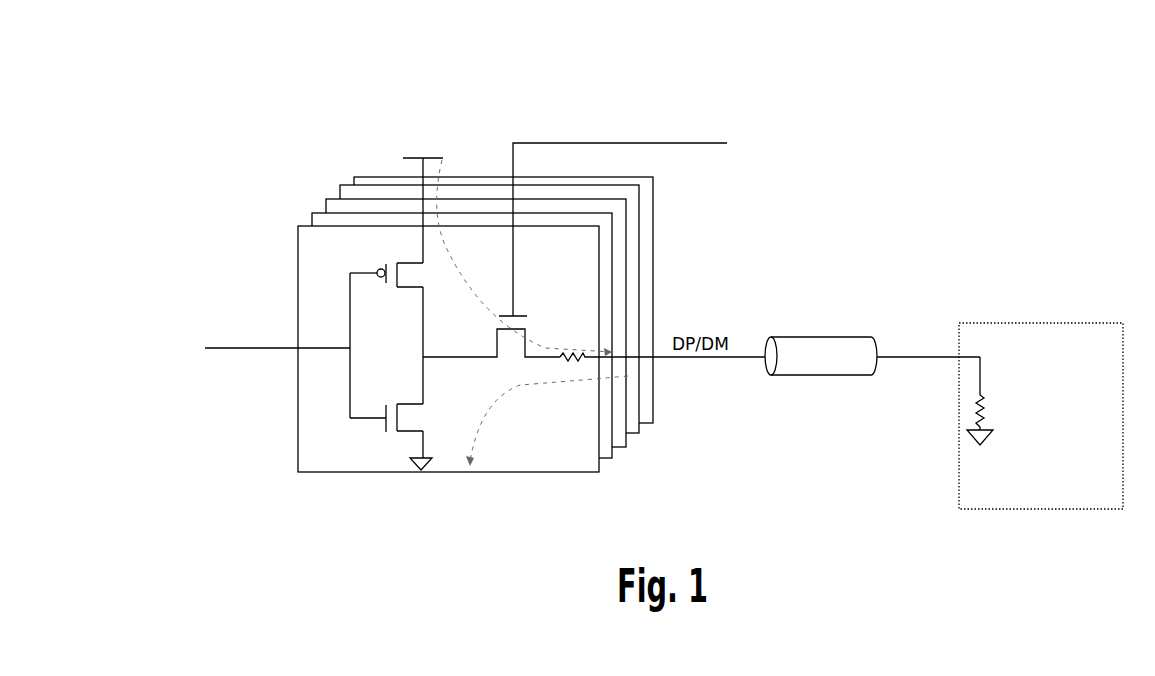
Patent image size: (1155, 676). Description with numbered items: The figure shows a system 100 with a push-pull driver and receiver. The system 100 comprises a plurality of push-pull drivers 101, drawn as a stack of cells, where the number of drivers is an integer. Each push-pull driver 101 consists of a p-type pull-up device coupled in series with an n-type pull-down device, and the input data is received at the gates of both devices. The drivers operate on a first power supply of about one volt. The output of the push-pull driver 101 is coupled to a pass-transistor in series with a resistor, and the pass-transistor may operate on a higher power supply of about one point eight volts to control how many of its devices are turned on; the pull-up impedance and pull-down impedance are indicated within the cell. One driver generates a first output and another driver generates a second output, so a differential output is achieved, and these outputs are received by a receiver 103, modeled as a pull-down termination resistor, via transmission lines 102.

The system 100 is at (928, 128).
The push-pull driver 101 is at (298, 226).
The transmission line 102 is at (806, 366).
The receiver 103 is at (1017, 323).